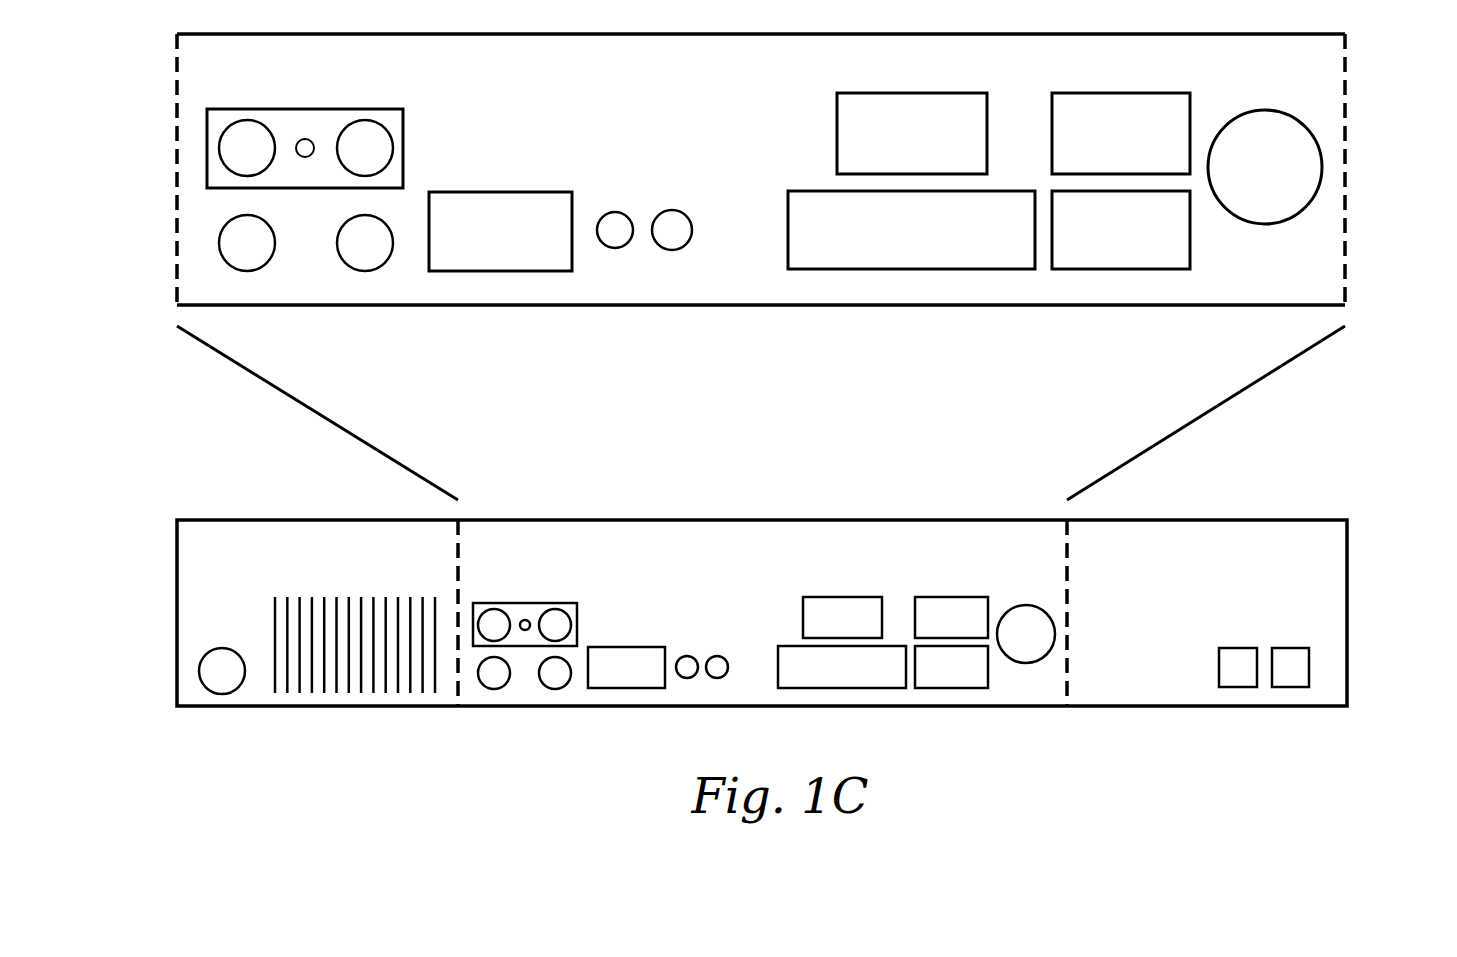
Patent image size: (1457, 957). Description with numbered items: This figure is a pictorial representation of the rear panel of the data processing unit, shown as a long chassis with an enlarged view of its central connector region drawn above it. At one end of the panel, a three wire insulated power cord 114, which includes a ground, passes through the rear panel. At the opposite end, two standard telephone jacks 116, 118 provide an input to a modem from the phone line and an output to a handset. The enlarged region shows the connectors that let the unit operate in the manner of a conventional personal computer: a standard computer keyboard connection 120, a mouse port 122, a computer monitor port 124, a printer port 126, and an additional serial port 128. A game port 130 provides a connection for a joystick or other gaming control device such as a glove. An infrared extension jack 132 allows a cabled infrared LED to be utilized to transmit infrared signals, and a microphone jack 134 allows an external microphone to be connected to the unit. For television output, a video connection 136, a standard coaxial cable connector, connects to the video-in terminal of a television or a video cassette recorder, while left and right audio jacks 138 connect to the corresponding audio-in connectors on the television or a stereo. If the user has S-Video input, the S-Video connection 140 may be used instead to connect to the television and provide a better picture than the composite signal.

The power cord 114 is at (199, 672).
The telephone jack 116 is at (1238, 648).
The telephone jack 118 is at (1293, 648).
The computer keyboard connection 120 is at (1322, 167).
The mouse port 122 is at (1155, 93).
The computer monitor port 124 is at (950, 93).
The printer port 126 is at (842, 269).
The serial port 128 is at (1107, 269).
The game port 130 is at (533, 192).
The infrared extension jack 132 is at (615, 212).
The microphone jack 134 is at (692, 233).
The video connection 136 is at (393, 148).
The left and right audio jacks 138 is at (227, 168).
The S-Video connection 140 is at (343, 222).